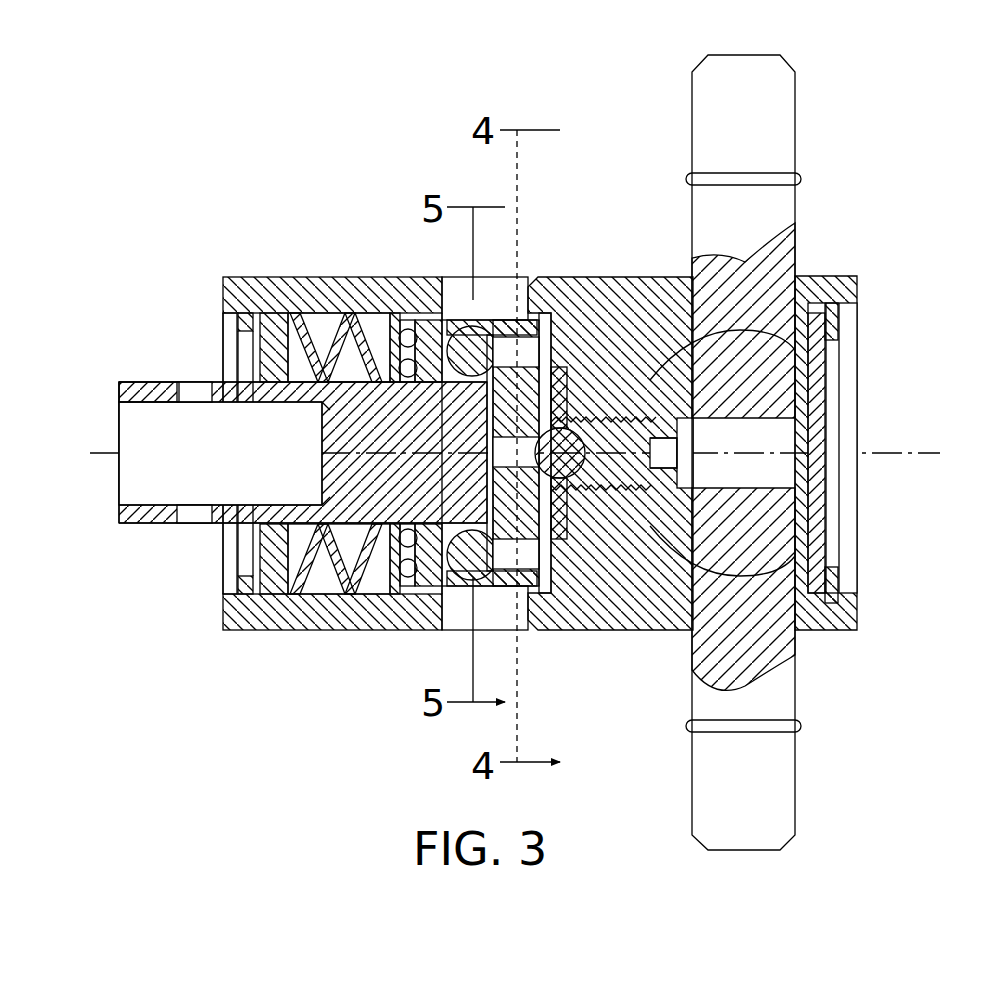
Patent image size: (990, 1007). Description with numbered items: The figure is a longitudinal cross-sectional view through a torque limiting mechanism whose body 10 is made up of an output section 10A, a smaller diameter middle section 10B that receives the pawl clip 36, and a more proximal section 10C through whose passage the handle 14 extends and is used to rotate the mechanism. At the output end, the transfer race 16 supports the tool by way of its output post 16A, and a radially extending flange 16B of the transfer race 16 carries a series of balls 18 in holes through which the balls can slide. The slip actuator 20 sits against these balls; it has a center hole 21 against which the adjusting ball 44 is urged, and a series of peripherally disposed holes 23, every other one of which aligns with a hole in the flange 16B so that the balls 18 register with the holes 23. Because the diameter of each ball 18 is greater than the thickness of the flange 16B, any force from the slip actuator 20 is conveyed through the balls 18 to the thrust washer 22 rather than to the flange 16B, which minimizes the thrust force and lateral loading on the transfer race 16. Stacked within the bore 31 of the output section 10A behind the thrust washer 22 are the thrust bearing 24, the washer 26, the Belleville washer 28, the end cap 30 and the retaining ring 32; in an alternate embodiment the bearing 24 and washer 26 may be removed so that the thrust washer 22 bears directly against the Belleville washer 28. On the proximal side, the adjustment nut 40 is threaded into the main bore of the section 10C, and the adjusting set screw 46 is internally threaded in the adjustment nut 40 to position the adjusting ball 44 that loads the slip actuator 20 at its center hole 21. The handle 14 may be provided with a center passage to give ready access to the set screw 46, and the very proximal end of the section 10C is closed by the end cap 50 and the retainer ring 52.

The body 10 is at (296, 178).
The output section 10A is at (297, 632).
The middle section 10B is at (652, 628).
The proximal section 10C is at (665, 270).
The handle 14 is at (818, 148).
The transfer race 16 is at (140, 530).
The output post 16A is at (137, 382).
The radially extending flange 16B is at (480, 586).
The balls 18 is at (471, 312).
The slip actuator 20 is at (575, 510).
The center hole 21 is at (545, 400).
The thrust washer 22 is at (440, 314).
The peripherally disposed holes 23 is at (527, 343).
The thrust bearing 24 is at (410, 588).
The washer 26 is at (380, 315).
The Belleville washer 28 is at (300, 315).
The end cap 30 is at (290, 315).
The bore 31 is at (230, 325).
The retaining ring 32 is at (240, 592).
The pawl clip 36 is at (489, 603).
The adjustment nut 40 is at (760, 353).
The adjusting ball 44 is at (565, 372).
The adjusting set screw 46 is at (760, 440).
The end cap 50 is at (825, 510).
The retainer ring 52 is at (840, 578).